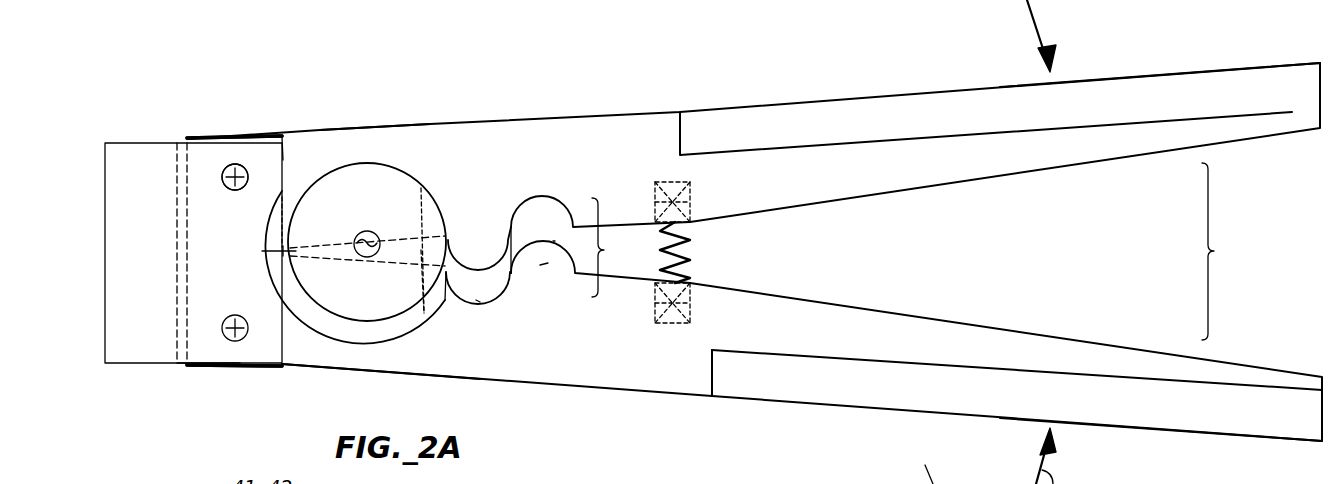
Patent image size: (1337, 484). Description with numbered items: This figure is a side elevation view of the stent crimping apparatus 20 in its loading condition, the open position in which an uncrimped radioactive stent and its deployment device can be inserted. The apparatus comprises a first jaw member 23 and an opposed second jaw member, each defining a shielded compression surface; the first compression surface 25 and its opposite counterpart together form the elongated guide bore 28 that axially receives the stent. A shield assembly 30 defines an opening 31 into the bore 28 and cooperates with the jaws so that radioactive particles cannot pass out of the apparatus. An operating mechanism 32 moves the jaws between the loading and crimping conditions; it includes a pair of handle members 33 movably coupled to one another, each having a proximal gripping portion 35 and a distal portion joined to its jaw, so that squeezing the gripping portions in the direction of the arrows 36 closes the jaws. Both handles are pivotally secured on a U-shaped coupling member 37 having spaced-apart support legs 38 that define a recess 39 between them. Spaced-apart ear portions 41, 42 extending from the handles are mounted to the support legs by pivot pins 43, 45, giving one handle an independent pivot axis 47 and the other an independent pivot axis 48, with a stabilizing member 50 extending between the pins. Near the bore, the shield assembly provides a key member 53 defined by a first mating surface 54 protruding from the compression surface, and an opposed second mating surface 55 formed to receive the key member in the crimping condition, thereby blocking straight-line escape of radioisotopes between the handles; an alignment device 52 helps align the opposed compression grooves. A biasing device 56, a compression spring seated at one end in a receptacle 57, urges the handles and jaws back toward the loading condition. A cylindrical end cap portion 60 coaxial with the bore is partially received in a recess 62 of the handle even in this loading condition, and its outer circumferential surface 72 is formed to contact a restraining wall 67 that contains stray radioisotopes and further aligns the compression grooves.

The stent crimping apparatus 20 is at (468, 50).
The first jaw member 23 is at (483, 137).
The first compression surface 25 is at (430, 187).
The guide bore 28 is at (393, 240).
The shield assembly 30 is at (356, 160).
The opening 31 is at (373, 258).
The operating mechanism 32 is at (1225, 251).
The handle member 33 is at (1334, 83).
The proximal gripping portion 35 is at (1170, 68).
The arrows 36 is at (1040, 30).
The coupling member 37 is at (115, 143).
The support leg 38 is at (283, 158).
The recess 39 is at (192, 140).
The ear portion 41 is at (244, 137).
The ear portion 42 is at (234, 137).
The pivot pin 43 is at (237, 191).
The pivot pin 45 is at (237, 315).
The pivot axis 47 is at (235, 164).
The pivot axis 48 is at (225, 366).
The stabilizing member 50 is at (193, 366).
The alignment device 52 is at (615, 247).
The key member 53 is at (513, 265).
The first mating surface 54 is at (475, 268).
The second mating surface 55 is at (483, 290).
The biasing device 56 is at (694, 263).
The receptacle 57 is at (667, 182).
The end cap portion 60 is at (431, 114).
The recess 62 is at (352, 333).
The restraining wall 67 is at (365, 335).
The outer circumferential surface 72 is at (407, 313).